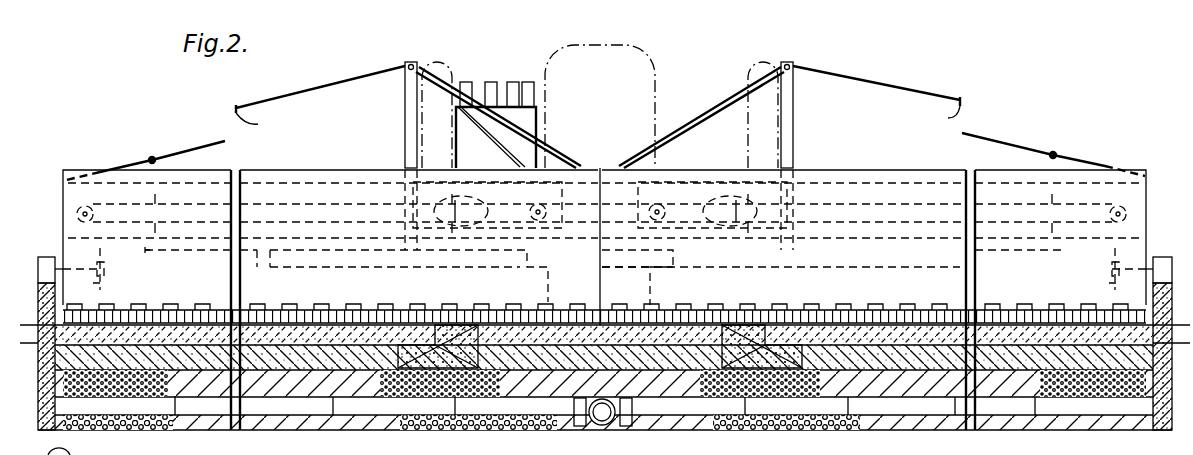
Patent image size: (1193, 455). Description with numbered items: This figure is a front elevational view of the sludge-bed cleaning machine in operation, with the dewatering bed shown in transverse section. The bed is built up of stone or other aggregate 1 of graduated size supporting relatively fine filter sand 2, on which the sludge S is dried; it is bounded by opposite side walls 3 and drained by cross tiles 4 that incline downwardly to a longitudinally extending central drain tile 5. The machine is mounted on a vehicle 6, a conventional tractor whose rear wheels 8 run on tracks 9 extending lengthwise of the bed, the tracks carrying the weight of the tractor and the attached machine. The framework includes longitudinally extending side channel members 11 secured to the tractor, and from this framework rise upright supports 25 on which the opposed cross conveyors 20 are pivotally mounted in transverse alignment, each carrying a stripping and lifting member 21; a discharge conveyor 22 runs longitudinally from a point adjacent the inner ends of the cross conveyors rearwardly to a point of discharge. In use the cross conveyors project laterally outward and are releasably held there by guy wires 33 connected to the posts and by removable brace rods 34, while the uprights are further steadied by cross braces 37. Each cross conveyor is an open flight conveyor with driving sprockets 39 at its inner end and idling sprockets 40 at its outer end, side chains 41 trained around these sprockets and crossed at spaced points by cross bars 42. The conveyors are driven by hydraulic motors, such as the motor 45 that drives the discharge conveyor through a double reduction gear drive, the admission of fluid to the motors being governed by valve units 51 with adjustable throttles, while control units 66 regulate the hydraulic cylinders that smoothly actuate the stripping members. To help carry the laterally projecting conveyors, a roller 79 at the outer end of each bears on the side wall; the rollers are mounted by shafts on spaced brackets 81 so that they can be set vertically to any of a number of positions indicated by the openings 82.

The aggregate 1 is at (453, 424).
The filter sand 2 is at (295, 352).
The side walls 3 is at (1148, 422).
The cross tiles 4 is at (307, 405).
The central drain tile 5 is at (603, 425).
The vehicle 6 is at (656, 72).
The rear wheels 8 is at (448, 72).
The tracks 9 is at (435, 335).
The side channel members 11 is at (527, 268).
The first cross conveyor 20 is at (940, 183).
The first stripping and lifting member 21 is at (836, 180).
The discharge conveyor 22 is at (549, 285).
The upright support 25 is at (405, 100).
The guy wires 33 is at (603, 123).
The brace rods 34 is at (262, 268).
The cross braces 37 is at (622, 158).
The driving sprockets 39 is at (548, 211).
The idling sprockets 40 is at (77, 212).
The side chains 41 is at (290, 205).
The cross bars 42 is at (310, 232).
The hydraulic motor 45 is at (453, 197).
The valve units 51 is at (491, 82).
The control units 66 is at (530, 82).
The roller 79 is at (45, 258).
The brackets 81 is at (103, 268).
The openings 82 is at (103, 283).
The sludge S is at (283, 335).